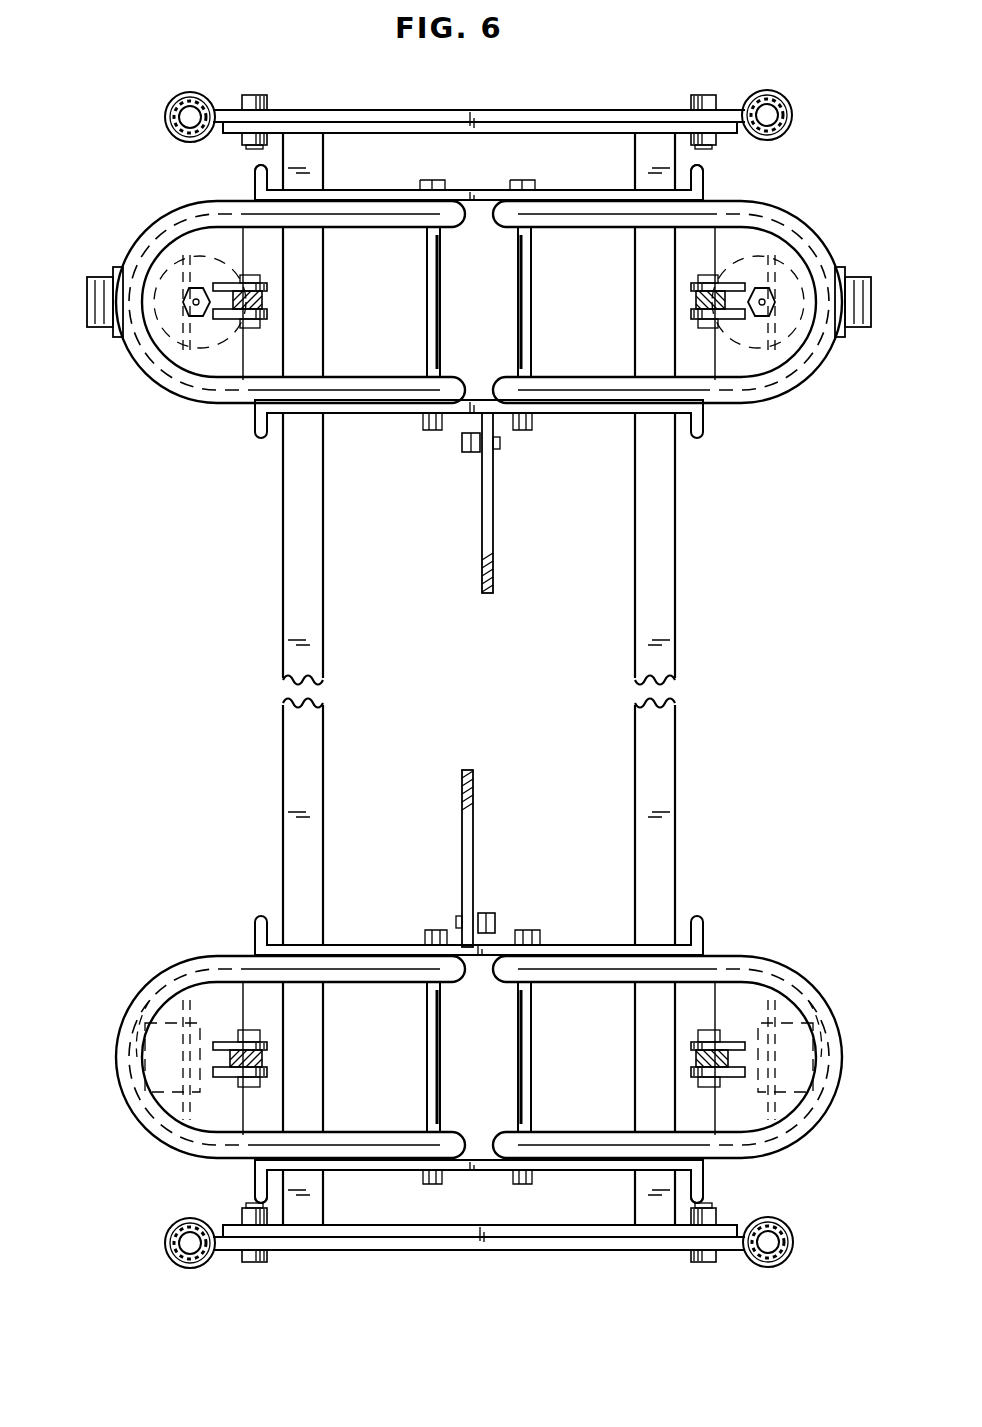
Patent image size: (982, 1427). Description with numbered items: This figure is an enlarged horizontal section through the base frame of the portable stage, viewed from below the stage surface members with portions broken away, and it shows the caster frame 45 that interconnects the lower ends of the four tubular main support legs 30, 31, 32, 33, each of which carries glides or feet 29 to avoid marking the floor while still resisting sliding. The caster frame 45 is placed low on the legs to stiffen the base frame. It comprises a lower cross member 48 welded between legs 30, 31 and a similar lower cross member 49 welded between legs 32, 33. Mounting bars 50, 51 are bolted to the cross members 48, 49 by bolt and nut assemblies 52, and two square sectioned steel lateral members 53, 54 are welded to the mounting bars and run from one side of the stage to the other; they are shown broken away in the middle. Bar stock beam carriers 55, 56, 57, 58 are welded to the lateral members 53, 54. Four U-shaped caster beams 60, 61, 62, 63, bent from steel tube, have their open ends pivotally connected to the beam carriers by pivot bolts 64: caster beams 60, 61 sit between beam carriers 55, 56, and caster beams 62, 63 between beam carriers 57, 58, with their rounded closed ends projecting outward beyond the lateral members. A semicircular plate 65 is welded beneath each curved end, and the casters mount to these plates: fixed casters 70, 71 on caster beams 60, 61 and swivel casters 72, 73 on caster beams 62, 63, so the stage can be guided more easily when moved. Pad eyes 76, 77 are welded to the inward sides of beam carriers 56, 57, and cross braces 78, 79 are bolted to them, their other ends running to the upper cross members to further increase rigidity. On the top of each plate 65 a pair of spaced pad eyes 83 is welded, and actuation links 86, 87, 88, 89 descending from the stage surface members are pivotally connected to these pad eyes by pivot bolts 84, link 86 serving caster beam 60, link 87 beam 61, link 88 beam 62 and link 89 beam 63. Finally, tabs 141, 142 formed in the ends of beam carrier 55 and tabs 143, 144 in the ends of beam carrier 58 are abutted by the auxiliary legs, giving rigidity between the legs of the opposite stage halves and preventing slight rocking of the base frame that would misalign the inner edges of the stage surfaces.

The glides or feet 29 is at (178, 140).
The main support leg 30 is at (178, 1270).
The main support leg 31 is at (780, 1268).
The main support leg 32 is at (168, 125).
The main support leg 33 is at (787, 102).
The caster frame 45 is at (517, 679).
The lower cross member 48 is at (375, 1250).
The lower cross member 49 is at (498, 110).
The mounting bar 50 is at (493, 1226).
The mounting bar 51 is at (527, 130).
The bolt and nut assemblies 52 is at (276, 90).
The lateral member 53 is at (323, 668).
The lateral member 54 is at (665, 705).
The beam carrier 55 is at (590, 1170).
The beam carrier 56 is at (590, 945).
The beam carrier 57 is at (590, 412).
The beam carrier 58 is at (588, 190).
The caster beam 60 is at (178, 1160).
The caster beam 61 is at (800, 1130).
The caster beam 62 is at (178, 400).
The caster beam 63 is at (760, 400).
The pivot bolt 64 is at (518, 322).
The semicircular plate 65 is at (185, 350).
The fixed caster 70 is at (153, 978).
The fixed caster 71 is at (795, 985).
The swivel caster 72 is at (88, 322).
The swivel caster 73 is at (878, 325).
The pad eye 76 is at (482, 915).
The pad eye 77 is at (470, 455).
The cross brace 78 is at (462, 828).
The cross brace 79 is at (494, 545).
The pad eyes 83 is at (268, 287).
The pivot bolt 84 is at (250, 328).
The actuation link 86 is at (262, 1058).
The actuation link 87 is at (692, 1060).
The actuation link 88 is at (262, 300).
The actuation link 89 is at (694, 300).
The tab 141 is at (255, 1188).
The tab 142 is at (703, 1188).
The tab 143 is at (255, 178).
The tab 144 is at (703, 178).